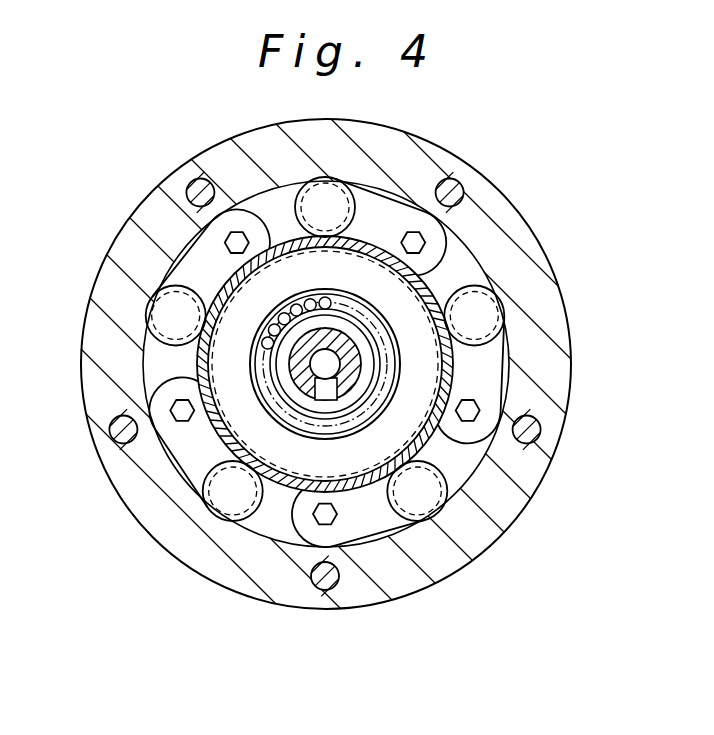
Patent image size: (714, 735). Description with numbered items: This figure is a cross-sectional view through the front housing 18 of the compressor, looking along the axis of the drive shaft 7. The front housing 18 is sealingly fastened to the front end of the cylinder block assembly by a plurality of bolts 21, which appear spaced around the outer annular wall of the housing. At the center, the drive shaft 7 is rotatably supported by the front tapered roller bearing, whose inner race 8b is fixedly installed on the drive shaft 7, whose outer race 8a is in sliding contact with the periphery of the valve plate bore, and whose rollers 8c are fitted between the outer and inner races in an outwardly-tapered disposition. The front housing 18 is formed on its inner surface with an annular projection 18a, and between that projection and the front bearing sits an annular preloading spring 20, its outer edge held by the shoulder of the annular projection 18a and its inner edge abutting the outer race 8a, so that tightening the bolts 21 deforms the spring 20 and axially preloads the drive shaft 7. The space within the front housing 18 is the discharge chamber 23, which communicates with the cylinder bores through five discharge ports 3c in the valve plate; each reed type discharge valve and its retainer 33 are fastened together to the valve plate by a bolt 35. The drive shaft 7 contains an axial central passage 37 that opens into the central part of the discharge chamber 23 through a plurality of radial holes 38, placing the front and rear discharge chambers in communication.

The discharge port 3c is at (301, 182).
The drive shaft 7 is at (353, 347).
The outer race 8a is at (256, 381).
The inner race 8b is at (295, 393).
The rollers 8c is at (279, 326).
The front housing 18 is at (530, 256).
The annular projection 18a is at (208, 367).
The annular preloading spring 20 is at (290, 272).
The bolts 21 is at (190, 186).
The discharge chamber 23 is at (471, 284).
The retainer 33 is at (375, 210).
The bolt 35 is at (241, 231).
The axial central passage 37 is at (340, 364).
The holes 38 is at (327, 398).